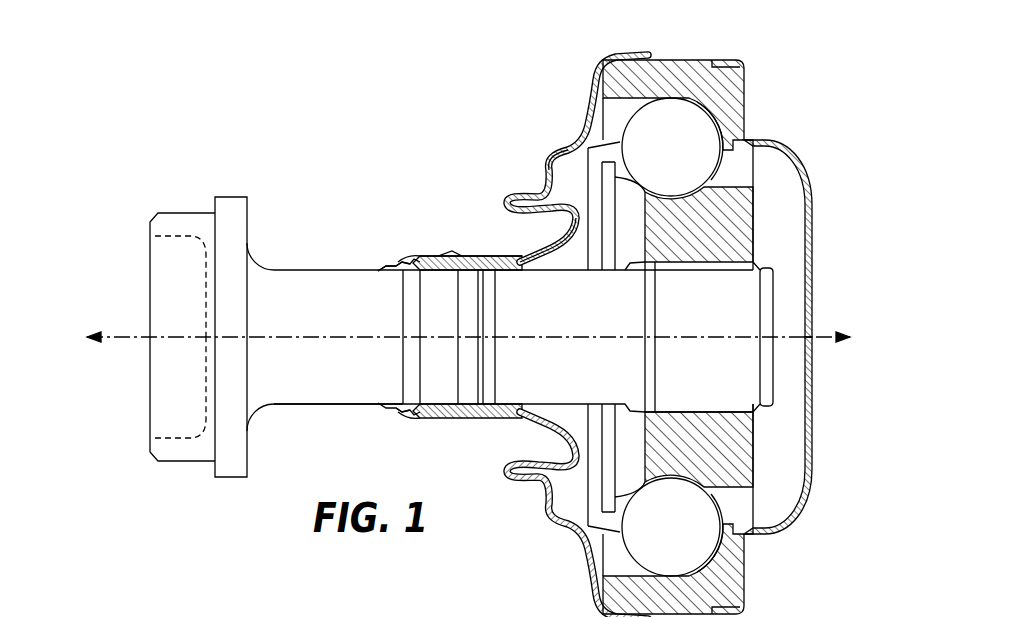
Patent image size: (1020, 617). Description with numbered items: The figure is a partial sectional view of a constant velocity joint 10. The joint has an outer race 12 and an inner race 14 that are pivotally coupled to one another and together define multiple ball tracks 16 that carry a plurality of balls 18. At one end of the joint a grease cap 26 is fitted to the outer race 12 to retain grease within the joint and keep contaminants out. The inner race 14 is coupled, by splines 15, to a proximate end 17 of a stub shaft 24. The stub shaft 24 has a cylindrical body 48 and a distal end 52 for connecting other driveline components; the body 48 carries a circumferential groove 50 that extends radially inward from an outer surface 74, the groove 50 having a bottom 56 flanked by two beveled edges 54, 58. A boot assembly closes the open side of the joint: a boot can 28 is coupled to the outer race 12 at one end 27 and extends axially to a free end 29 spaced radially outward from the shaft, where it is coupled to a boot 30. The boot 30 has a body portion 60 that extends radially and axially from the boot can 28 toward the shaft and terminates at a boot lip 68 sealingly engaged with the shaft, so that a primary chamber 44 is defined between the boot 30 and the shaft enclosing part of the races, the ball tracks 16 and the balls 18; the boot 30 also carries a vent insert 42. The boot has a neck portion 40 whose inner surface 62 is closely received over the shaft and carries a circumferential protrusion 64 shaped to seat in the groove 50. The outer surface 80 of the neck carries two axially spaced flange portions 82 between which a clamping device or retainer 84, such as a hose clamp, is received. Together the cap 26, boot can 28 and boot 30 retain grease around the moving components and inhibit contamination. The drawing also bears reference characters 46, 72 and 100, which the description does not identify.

The constant velocity joint 10 is at (828, 136).
The outer race 12 is at (724, 92).
The inner race 14 is at (737, 243).
The splines 15 is at (722, 262).
The ball tracks 16 is at (713, 188).
The proximate end 17 is at (737, 432).
The balls 18 is at (700, 143).
The stub shaft 24 is at (285, 282).
The grease cap 26 is at (813, 283).
The end 27 is at (640, 53).
The boot can 28 is at (592, 112).
The free end 29 is at (510, 470).
The boot 30 is at (494, 258).
The neck portion 40 is at (470, 257).
The vent insert 42 is at (441, 282).
The primary chamber 44 is at (570, 173).
The seal thread 46 is at (385, 268).
The cylindrical body 48 is at (312, 386).
The groove 50 is at (420, 341).
The distal end 52 is at (270, 265).
The beveled edge 54 is at (408, 404).
The groove bottom 56 is at (442, 388).
The beveled edge 58 is at (468, 368).
The body portion 60 is at (553, 261).
The inner surface 62 is at (470, 280).
The circumferential protrusion 64 is at (452, 280).
The boot lip 68 is at (384, 268).
The retainer 72 is at (398, 259).
The outer surface 74 is at (278, 407).
The outer surface 80 is at (480, 257).
The flange portions 82 is at (410, 385).
The clamping device or retainer 84 is at (443, 257).
The shaft assembly 100 is at (373, 616).